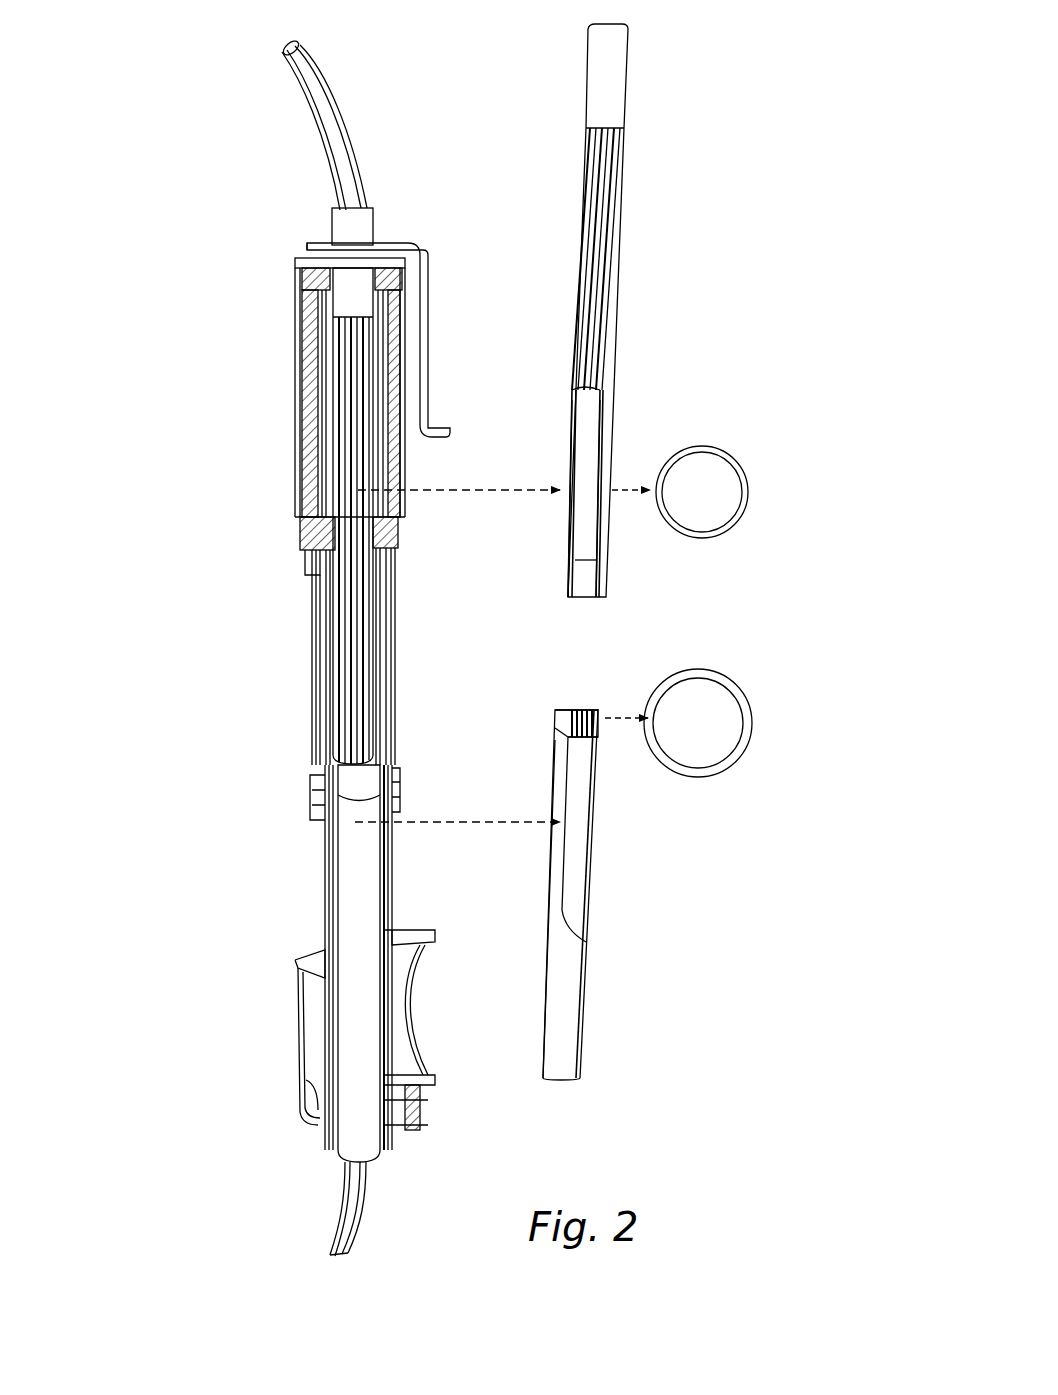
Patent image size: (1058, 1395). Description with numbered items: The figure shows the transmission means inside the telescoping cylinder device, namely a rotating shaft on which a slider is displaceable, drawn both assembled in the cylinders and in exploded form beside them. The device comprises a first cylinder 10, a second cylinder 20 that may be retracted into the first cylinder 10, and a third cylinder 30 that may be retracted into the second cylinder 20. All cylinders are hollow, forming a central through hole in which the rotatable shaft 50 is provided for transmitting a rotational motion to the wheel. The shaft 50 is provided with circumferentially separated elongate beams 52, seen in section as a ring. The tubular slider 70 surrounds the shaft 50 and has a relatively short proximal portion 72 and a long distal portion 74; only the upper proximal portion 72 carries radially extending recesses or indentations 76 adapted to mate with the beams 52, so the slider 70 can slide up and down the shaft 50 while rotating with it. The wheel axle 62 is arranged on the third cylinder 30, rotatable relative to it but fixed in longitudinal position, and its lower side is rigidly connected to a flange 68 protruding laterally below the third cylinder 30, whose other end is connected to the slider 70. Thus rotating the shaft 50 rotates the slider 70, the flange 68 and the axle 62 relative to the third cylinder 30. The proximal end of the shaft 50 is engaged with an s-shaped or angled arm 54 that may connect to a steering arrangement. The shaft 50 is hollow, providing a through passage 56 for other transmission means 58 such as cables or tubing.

The first cylinder 10 is at (300, 375).
The second cylinder 20 is at (320, 672).
The third cylinder 30 is at (323, 858).
The rotatable shaft 50 is at (330, 425).
The elongate beams 52 is at (600, 352).
The angled arm 54 is at (400, 410).
The through passage 56 is at (595, 560).
The transmission means 58 is at (350, 127).
The wheel axle 62 is at (415, 950).
The flange 68 is at (390, 1128).
The slider 70 is at (355, 915).
The proximal portion 72 is at (560, 722).
The distal portion 74 is at (553, 993).
The recesses 76 is at (575, 710).